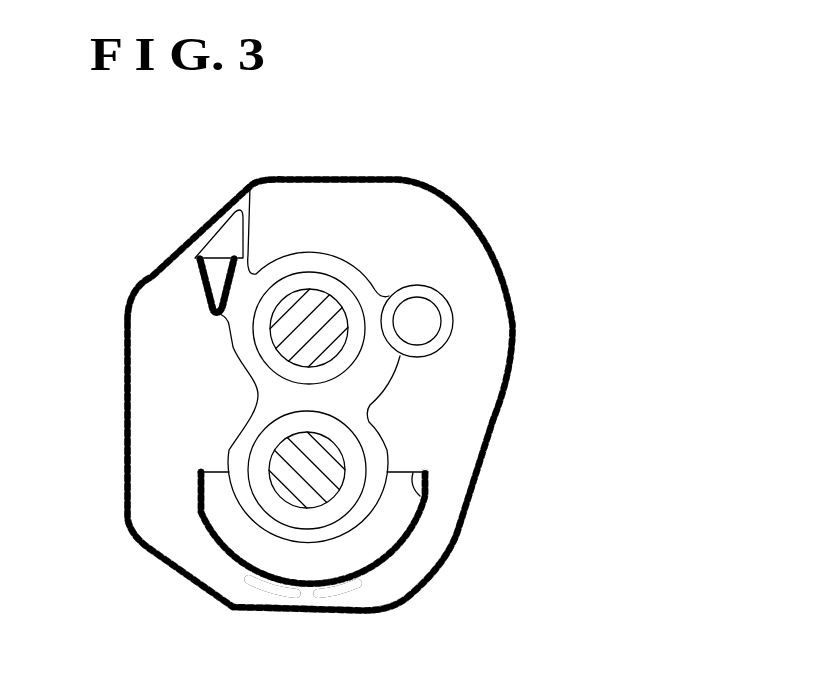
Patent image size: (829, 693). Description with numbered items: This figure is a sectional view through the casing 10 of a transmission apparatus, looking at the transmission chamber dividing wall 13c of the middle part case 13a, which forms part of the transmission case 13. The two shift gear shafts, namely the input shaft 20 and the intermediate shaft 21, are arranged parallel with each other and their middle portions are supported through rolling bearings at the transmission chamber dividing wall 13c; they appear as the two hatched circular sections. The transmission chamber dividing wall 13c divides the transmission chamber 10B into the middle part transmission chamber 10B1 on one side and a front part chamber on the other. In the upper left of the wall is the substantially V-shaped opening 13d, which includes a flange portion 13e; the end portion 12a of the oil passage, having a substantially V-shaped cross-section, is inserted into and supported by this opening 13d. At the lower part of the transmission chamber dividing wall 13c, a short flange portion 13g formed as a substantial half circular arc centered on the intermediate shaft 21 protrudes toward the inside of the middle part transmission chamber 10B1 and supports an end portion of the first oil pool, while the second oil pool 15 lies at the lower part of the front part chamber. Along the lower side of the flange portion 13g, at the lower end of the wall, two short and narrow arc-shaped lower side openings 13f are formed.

The casing 10 is at (407, 361).
The transmission chamber 10B is at (459, 245).
The middle part transmission chamber 10B1 is at (488, 283).
The end portion of the oil passage 12a is at (192, 286).
The transmission case 13 is at (500, 413).
The middle part case 13a is at (125, 438).
The transmission chamber dividing wall 13c is at (140, 378).
The opening 13d is at (192, 275).
The flange portion 13e is at (210, 314).
The lower side openings 13f is at (354, 587).
The flange portion 13g is at (200, 526).
The second oil pool 15 is at (417, 497).
The input shaft 20 is at (310, 300).
The intermediate shaft 21 is at (294, 452).